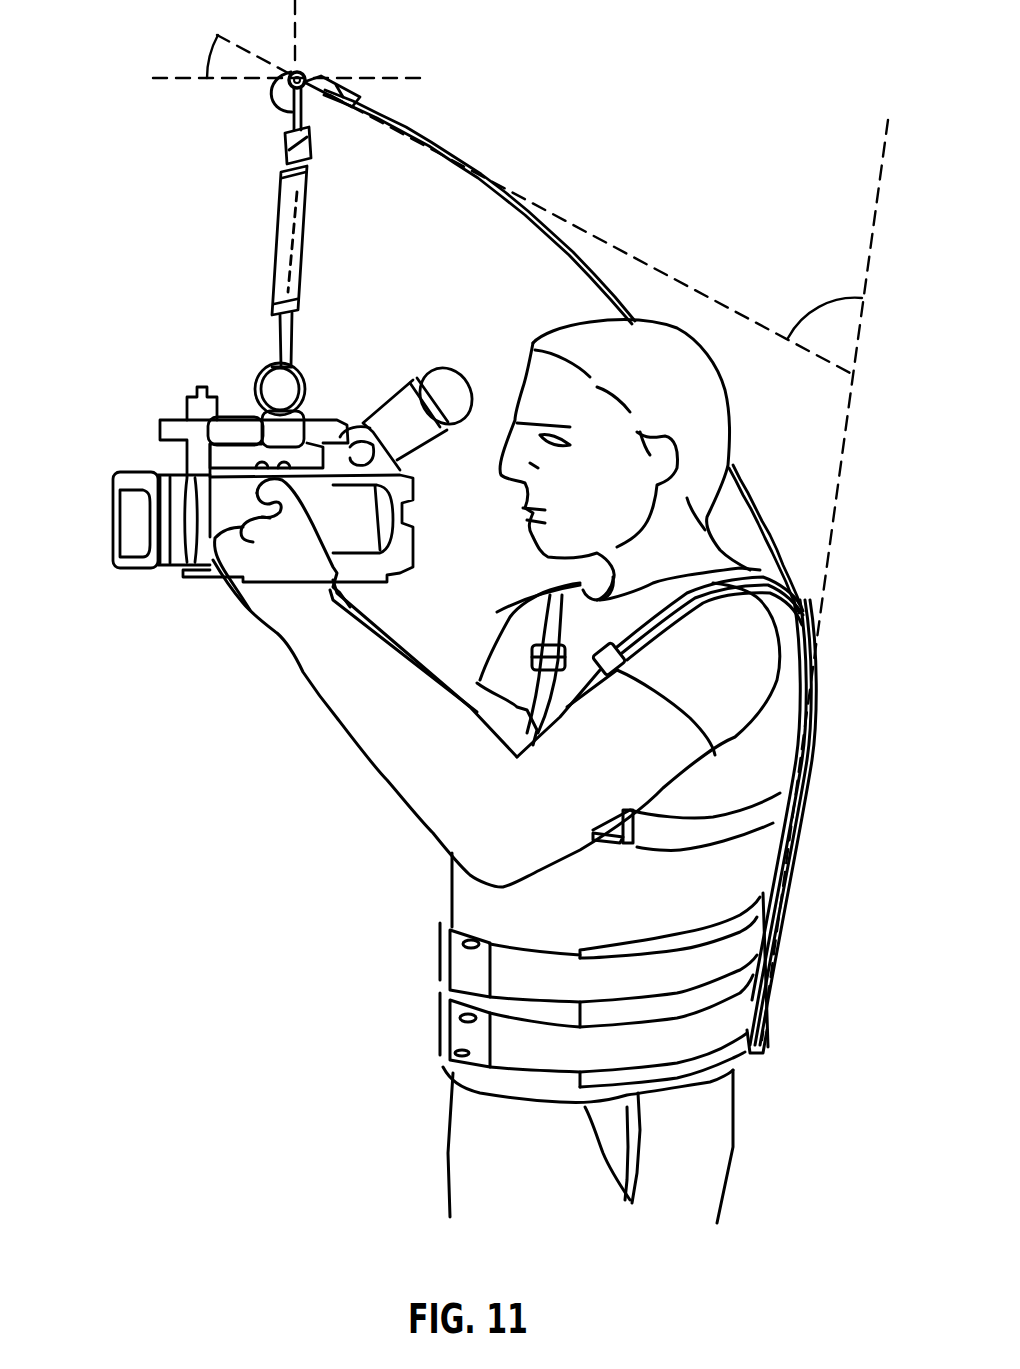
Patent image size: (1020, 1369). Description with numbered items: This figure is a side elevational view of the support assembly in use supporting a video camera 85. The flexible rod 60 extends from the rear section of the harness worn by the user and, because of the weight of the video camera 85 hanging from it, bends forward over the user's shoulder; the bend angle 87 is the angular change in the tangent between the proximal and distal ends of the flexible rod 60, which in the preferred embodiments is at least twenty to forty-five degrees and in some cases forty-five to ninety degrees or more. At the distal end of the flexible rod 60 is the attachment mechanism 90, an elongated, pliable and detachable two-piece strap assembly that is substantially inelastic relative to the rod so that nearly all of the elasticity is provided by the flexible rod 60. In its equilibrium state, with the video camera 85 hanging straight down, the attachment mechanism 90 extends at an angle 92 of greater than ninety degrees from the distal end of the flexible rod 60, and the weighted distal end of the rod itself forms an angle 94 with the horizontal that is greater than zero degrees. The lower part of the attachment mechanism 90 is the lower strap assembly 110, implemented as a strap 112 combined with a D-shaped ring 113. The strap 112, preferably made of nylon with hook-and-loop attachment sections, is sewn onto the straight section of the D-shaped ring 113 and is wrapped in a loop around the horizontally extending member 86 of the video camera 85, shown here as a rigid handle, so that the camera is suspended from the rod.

The flexible rod 60 is at (532, 230).
The video camera 85 is at (403, 527).
The horizontally extending member 86 is at (260, 437).
The bend angle 87 is at (820, 320).
The attachment mechanism 90 is at (282, 245).
The angle 92 is at (272, 100).
The angle 94 is at (208, 60).
The lower strap assembly 110 is at (257, 381).
The strap 112 is at (304, 414).
The D-shaped ring 113 is at (305, 378).